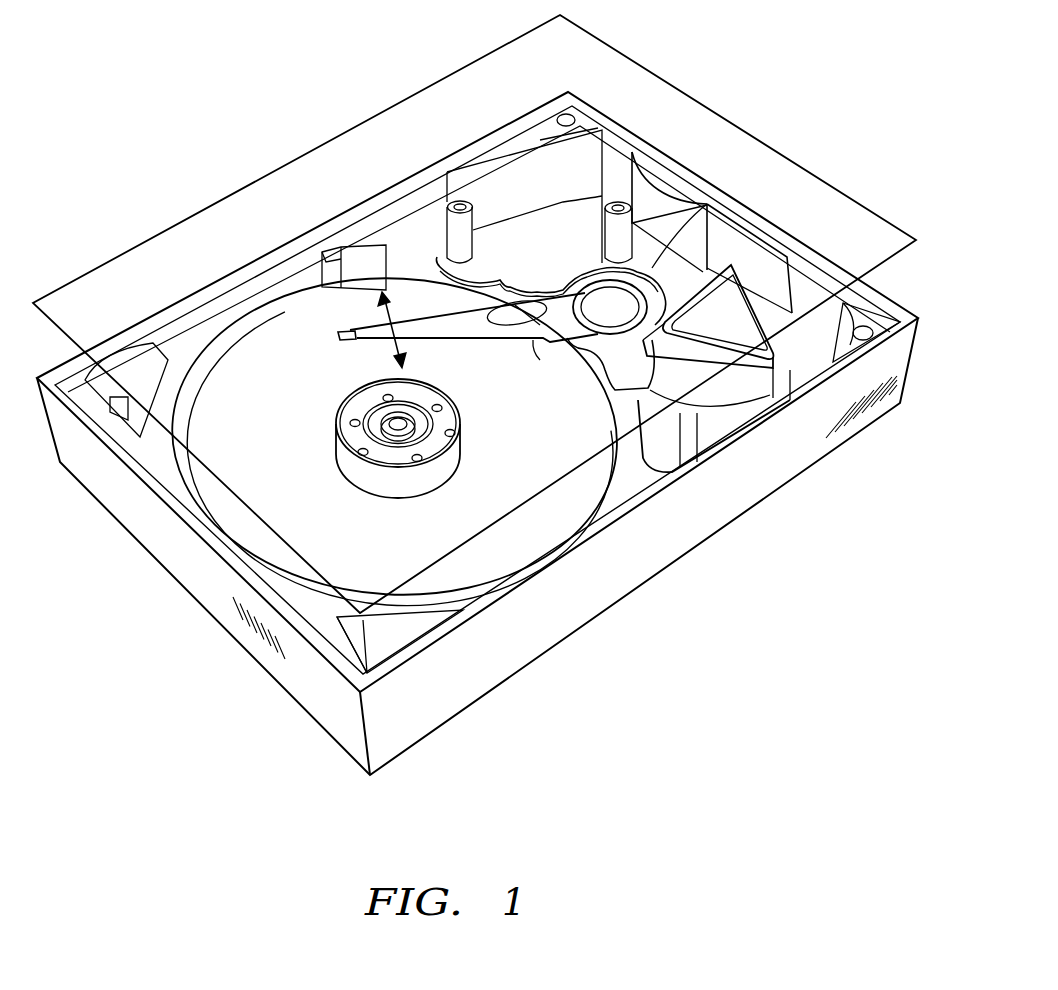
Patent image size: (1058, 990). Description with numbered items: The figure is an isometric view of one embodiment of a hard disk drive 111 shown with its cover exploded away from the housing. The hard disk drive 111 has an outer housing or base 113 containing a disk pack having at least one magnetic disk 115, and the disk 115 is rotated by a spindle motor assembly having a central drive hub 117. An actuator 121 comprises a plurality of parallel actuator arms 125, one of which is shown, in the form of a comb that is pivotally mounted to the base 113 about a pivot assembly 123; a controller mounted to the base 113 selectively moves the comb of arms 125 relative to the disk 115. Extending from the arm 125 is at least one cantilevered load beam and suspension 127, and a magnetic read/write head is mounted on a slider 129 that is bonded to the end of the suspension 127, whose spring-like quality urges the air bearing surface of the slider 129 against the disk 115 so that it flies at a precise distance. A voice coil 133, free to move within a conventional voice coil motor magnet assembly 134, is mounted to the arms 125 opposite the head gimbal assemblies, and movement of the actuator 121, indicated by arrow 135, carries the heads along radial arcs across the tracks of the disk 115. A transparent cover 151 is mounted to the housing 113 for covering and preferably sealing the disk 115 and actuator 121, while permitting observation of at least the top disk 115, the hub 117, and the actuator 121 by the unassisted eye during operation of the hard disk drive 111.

The hard disk drive 111 is at (150, 79).
The base 113 is at (264, 672).
The magnetic disk 115 is at (227, 513).
The central drive hub 117 is at (335, 443).
The actuator 121 is at (566, 271).
The pivot assembly 123 is at (612, 302).
The actuator arm 125 is at (543, 343).
The load beam and suspension 127 is at (370, 327).
The slider 129 is at (336, 333).
The voice coil 133 is at (793, 257).
The voice coil motor magnet assembly 134 is at (730, 356).
The arrow 135 is at (380, 333).
The transparent cover 151 is at (568, 43).